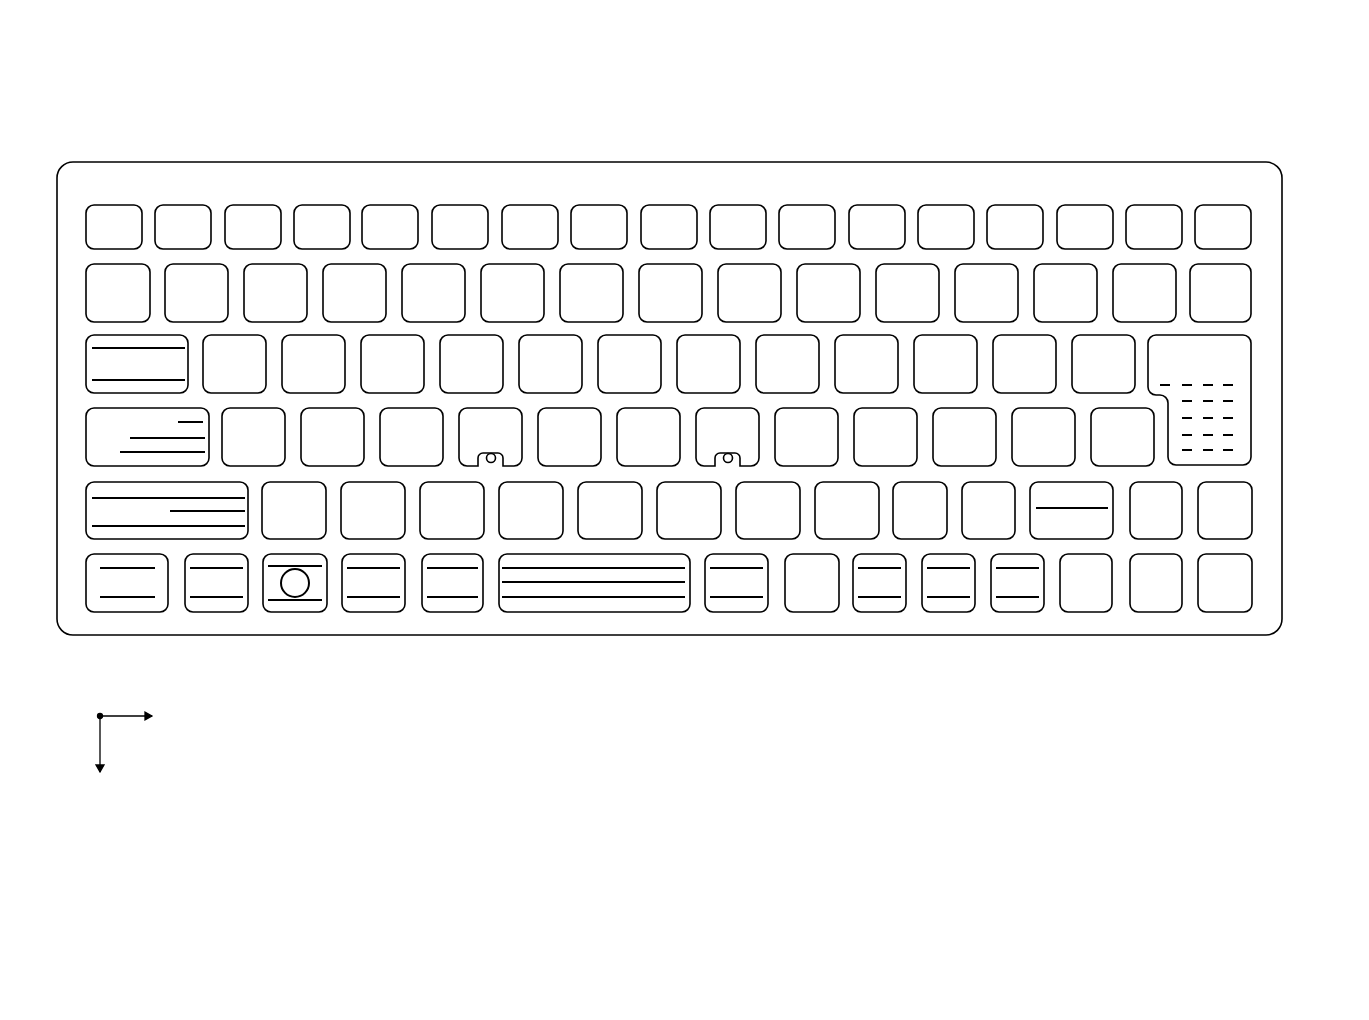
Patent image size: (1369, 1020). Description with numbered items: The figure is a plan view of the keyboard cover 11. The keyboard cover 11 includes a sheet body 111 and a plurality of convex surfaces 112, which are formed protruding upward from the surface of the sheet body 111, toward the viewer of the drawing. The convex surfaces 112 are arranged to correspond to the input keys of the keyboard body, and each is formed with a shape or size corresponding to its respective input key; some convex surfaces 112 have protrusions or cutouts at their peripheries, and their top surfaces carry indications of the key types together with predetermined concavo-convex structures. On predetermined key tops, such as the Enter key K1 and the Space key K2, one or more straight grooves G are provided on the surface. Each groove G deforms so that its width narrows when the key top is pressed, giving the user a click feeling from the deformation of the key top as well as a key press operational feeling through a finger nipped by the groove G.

The keyboard cover 11 is at (1196, 138).
The sheet body 111 is at (822, 163).
The convex surfaces 112 is at (255, 204).
The Enter key K1 is at (1232, 394).
The Space key K2 is at (548, 606).
The groove G is at (1236, 436).